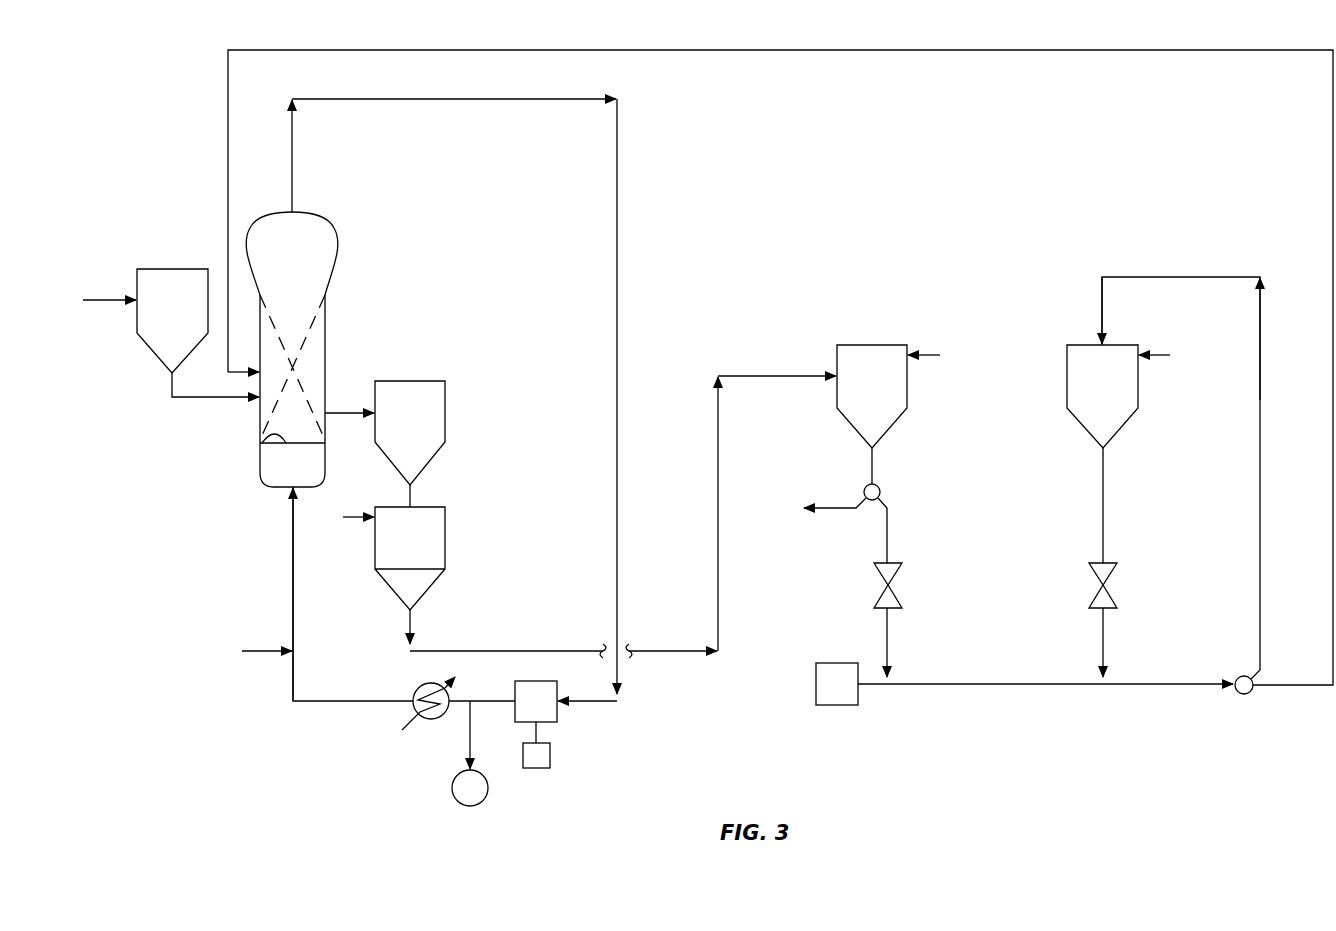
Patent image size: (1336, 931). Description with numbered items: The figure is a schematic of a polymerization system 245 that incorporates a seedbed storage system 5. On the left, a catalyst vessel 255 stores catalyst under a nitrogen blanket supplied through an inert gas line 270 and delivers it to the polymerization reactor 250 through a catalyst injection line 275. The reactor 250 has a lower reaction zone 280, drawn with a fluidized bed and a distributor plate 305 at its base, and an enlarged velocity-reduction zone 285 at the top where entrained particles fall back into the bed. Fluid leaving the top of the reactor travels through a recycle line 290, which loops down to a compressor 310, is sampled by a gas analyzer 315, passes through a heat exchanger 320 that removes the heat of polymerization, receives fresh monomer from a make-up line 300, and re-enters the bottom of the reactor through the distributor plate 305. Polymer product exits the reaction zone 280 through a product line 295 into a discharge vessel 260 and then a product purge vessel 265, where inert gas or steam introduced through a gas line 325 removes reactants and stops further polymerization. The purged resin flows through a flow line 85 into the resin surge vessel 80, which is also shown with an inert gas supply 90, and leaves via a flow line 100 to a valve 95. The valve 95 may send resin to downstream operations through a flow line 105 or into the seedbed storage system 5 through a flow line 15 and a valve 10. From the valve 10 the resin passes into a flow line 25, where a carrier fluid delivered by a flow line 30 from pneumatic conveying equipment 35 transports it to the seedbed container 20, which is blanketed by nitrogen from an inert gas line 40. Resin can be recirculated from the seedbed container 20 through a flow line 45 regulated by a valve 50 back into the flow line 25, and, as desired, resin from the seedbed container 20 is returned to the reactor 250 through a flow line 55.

The seedbed storage system 5 is at (1008, 251).
The valve 10 is at (895, 592).
The flow line 15 is at (890, 518).
The seedbed container 20 is at (1138, 378).
The flow line 25 is at (1260, 515).
The flow line 30 is at (868, 686).
The pneumatic conveying equipment 35 is at (838, 663).
The inert gas line 40 is at (1170, 355).
The flow line 45 is at (1103, 520).
The valve 50 is at (1110, 592).
The flow line 55 is at (1175, 50).
The resin surge vessel 80 is at (907, 378).
The flow line 85 is at (792, 376).
The inlet line 90 is at (940, 355).
The valve 95 is at (866, 486).
The flow line 100 is at (872, 465).
The flow line 105 is at (823, 522).
The polymerization system 245 is at (272, 737).
The polymerization reactor 250 is at (325, 340).
The catalyst vessel 255 is at (137, 282).
The discharge vessel 260 is at (445, 415).
The product purge vessel 265 is at (445, 540).
The inert gas line 270 is at (95, 310).
The catalyst injection line 275 is at (185, 400).
The reaction zone 280 is at (318, 313).
The velocity-reduction zone 285 is at (311, 254).
The recycle line 290 is at (450, 99).
The product line 295 is at (340, 410).
The make-up line 300 is at (255, 648).
The distributor plate 305 is at (264, 432).
The compressor 310 is at (557, 722).
The gas analyzer 315 is at (488, 790).
The heat exchanger 320 is at (430, 720).
The gas line 325 is at (343, 517).